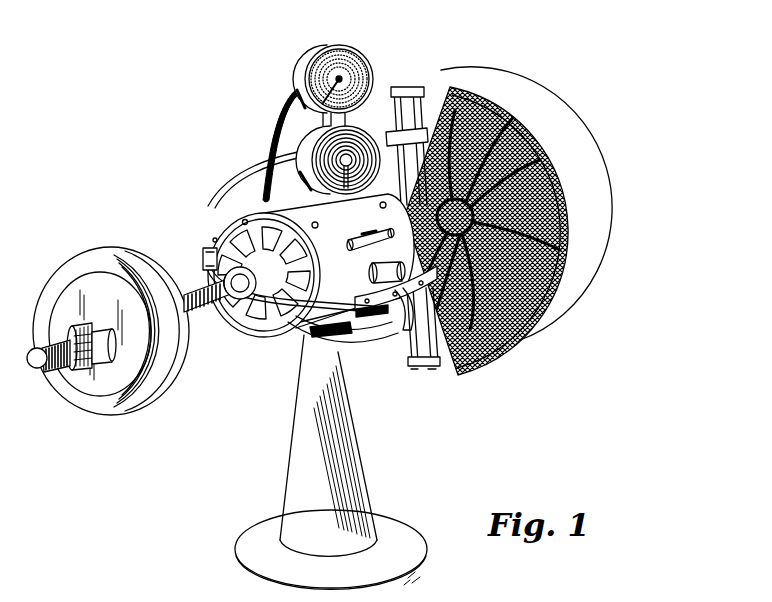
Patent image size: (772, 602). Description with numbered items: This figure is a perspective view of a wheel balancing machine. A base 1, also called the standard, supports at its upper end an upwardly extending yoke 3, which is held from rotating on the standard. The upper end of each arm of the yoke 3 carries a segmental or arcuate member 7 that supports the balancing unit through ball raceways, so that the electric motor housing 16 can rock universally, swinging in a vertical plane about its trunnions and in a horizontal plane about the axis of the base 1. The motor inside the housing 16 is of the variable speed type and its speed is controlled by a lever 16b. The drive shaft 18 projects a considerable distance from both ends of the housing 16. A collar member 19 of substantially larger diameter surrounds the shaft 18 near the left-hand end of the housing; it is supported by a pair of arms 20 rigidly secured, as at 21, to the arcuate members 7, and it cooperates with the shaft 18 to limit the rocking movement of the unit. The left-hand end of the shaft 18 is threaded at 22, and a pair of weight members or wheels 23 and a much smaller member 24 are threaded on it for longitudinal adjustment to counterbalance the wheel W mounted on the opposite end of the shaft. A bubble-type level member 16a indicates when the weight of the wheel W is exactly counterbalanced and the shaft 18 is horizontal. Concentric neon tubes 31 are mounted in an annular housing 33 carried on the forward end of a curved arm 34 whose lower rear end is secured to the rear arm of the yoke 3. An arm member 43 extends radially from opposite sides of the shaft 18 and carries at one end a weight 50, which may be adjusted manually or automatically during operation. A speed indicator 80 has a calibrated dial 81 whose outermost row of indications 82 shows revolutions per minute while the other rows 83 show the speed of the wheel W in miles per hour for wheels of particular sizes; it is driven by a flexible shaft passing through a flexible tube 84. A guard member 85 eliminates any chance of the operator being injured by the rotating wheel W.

The base 1 is at (352, 428).
The yoke 3 is at (373, 313).
The arcuate member 7 is at (397, 308).
The electric motor housing 16 is at (316, 213).
The level member 16a is at (370, 237).
The lever 16b is at (318, 226).
The drive shaft 18 is at (36, 369).
The collar member 19 is at (235, 300).
The arms 20 is at (204, 262).
The securing point 21 is at (363, 312).
The threaded portion 22 is at (208, 310).
The weight members 23 is at (138, 390).
The smaller weight member 24 is at (74, 362).
The neon tubes 31 is at (349, 150).
The annular housing 33 is at (314, 133).
The curved arm 34 is at (240, 173).
The arm member 43 is at (415, 92).
The weight 50 is at (405, 138).
The speed indicator 80 is at (359, 48).
The dial 81 is at (356, 83).
The outermost row of indications 82 is at (324, 46).
The rows of indications 83 is at (323, 70).
The flexible tube 84 is at (278, 147).
The guard member 85 is at (500, 125).
The wheel W is at (614, 157).